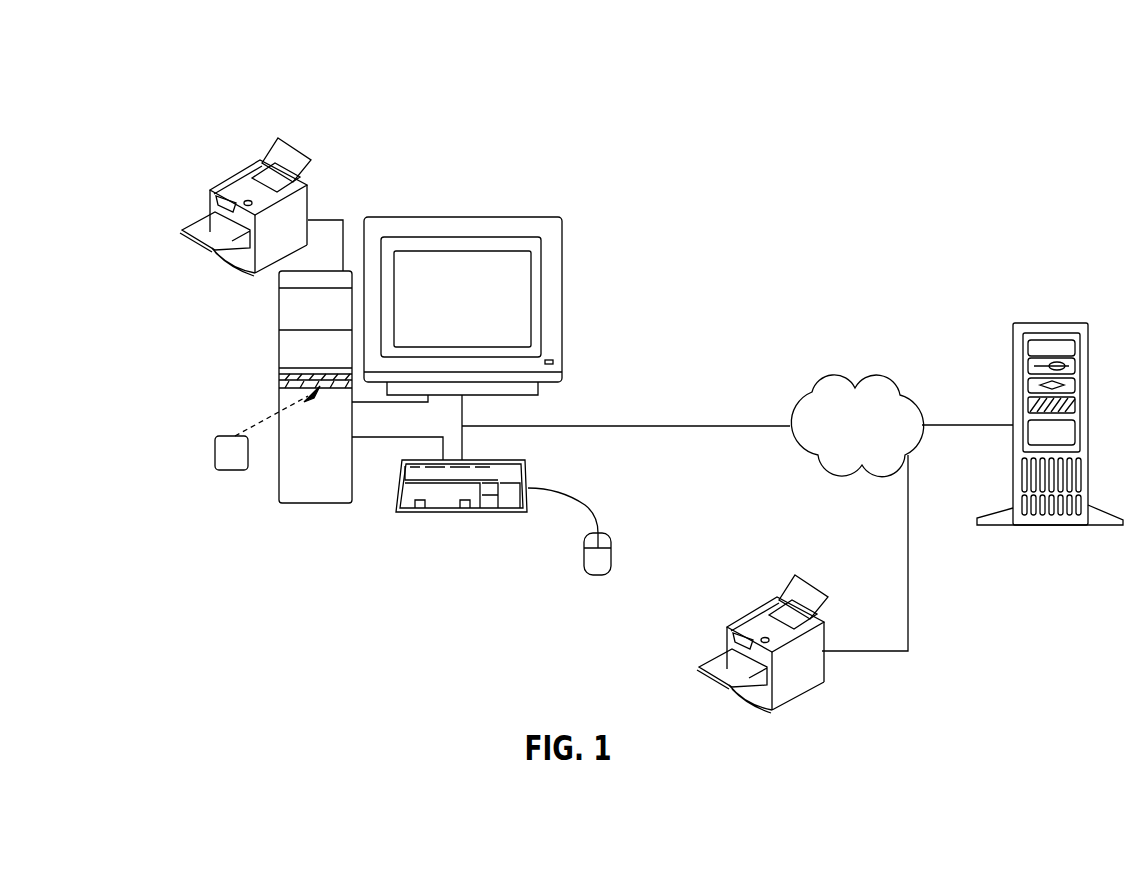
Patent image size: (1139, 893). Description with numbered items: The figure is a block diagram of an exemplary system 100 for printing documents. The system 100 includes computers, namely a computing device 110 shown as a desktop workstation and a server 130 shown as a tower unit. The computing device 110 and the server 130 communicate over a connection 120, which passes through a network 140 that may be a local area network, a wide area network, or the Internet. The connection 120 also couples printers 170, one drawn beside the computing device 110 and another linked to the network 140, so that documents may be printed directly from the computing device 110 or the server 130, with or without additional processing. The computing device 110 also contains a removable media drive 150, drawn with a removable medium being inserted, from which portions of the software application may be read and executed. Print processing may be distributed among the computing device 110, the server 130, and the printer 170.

The system 100 is at (327, 59).
The computing device 110 is at (462, 217).
The connection 120 is at (737, 527).
The server 130 is at (1050, 323).
The network 140 is at (839, 434).
The removable media drive 150 is at (268, 443).
The printer 170 is at (210, 232).